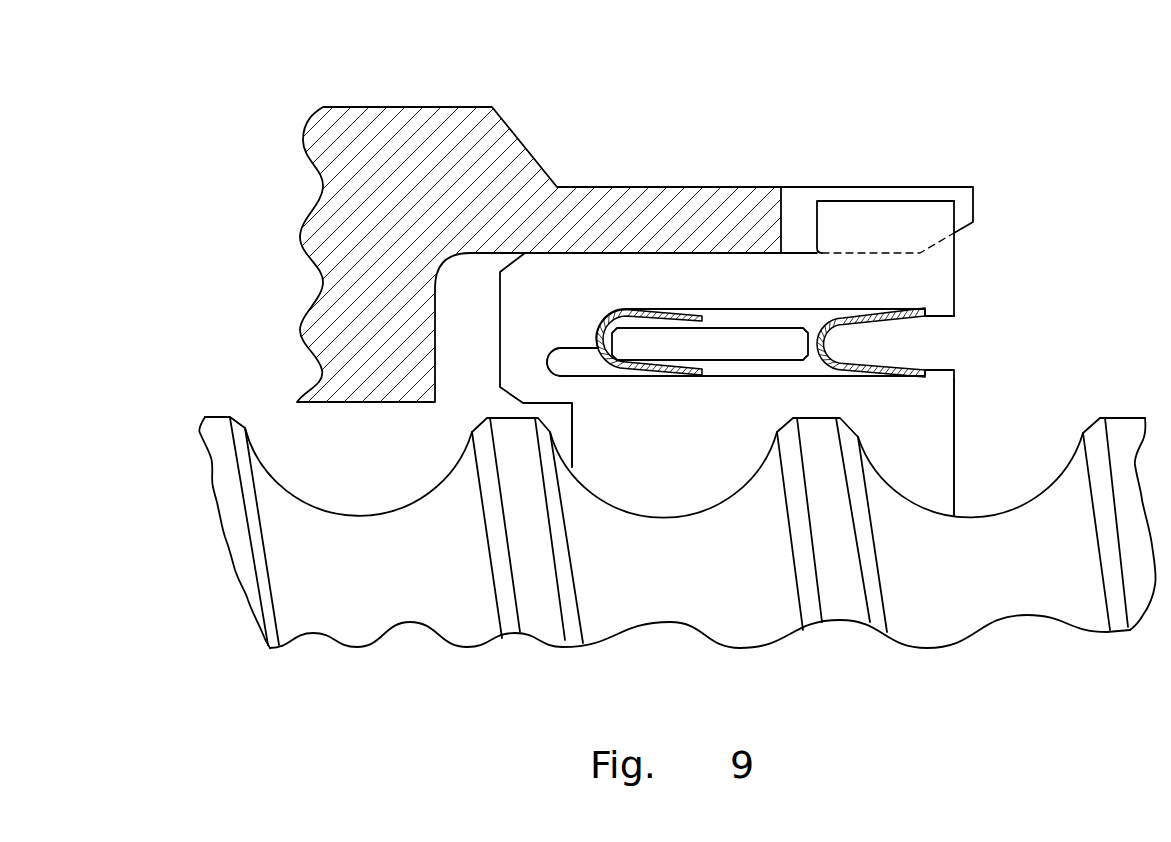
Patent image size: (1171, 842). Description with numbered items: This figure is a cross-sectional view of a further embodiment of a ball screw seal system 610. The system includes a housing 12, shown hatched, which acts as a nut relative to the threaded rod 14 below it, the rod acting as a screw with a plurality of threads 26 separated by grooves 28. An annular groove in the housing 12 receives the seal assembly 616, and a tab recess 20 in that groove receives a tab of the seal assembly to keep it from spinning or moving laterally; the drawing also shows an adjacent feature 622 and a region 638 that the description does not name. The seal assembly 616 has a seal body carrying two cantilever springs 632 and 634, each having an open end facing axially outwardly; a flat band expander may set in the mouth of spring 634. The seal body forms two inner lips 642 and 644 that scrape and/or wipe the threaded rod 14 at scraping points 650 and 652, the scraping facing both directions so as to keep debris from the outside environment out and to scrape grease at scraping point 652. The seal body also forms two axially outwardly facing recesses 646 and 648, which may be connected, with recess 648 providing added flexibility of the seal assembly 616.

The housing 12 is at (402, 107).
The threaded rod 14 is at (215, 502).
The tab recess 20 is at (798, 197).
The thread 26 is at (543, 613).
The groove 28 is at (387, 590).
The ball screw seal system 610 is at (1042, 183).
The seal assembly 616 is at (988, 327).
The carrier wall 622 is at (915, 200).
The cantilever spring 632 is at (877, 323).
The cantilever spring 634 is at (650, 313).
The cavity 638 is at (942, 273).
The inner lip 642 is at (943, 469).
The inner lip 644 is at (641, 481).
The axially outwardly facing recess 646 is at (815, 317).
The axially outwardly facing recess 648 is at (570, 362).
The scraping point 650 is at (962, 507).
The scraping point 652 is at (567, 453).